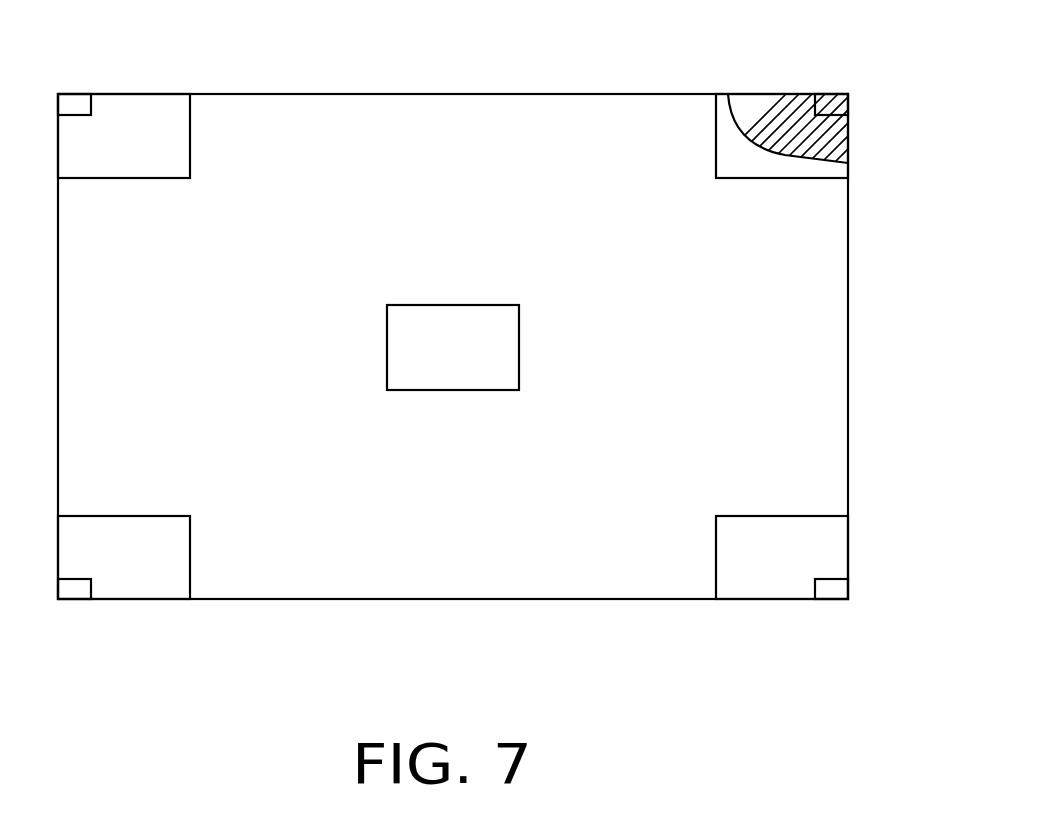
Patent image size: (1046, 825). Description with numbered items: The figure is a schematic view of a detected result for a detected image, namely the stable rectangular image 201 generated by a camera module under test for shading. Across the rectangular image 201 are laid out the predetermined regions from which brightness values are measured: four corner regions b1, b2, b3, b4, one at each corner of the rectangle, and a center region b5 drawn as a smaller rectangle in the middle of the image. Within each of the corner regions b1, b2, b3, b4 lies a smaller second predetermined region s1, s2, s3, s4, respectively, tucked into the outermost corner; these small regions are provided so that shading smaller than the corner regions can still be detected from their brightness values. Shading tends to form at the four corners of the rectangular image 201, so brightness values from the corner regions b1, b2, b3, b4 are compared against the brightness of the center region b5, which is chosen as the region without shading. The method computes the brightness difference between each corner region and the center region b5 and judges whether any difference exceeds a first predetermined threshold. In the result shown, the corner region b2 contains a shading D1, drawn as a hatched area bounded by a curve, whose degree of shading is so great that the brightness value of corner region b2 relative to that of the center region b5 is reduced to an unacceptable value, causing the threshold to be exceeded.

The stable rectangular image 201 is at (413, 140).
The corner region b1 is at (142, 123).
The corner region b2 is at (725, 113).
The corner region b3 is at (157, 574).
The corner region b4 is at (743, 579).
The center region b5 is at (485, 358).
The second predetermined region s1 is at (75, 103).
The second predetermined region s2 is at (830, 102).
The second predetermined region s3 is at (73, 588).
The second predetermined region s4 is at (833, 588).
The shading D1 is at (833, 138).